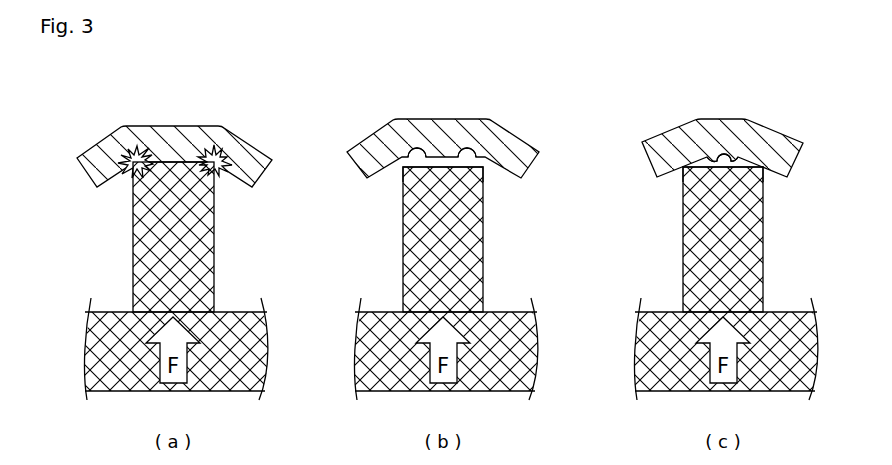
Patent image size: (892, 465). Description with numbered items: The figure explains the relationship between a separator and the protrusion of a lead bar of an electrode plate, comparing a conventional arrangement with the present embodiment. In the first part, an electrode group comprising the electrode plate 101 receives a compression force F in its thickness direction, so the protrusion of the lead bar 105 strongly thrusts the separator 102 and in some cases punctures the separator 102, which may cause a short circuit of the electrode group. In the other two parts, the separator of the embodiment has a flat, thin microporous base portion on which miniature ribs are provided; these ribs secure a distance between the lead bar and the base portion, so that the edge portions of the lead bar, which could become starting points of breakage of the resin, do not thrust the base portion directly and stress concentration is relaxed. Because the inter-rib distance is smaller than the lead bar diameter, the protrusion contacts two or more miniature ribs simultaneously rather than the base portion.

The electrode plate 101 is at (215, 253).
The separator 102 is at (243, 148).
The lead bar 105 is at (216, 237).